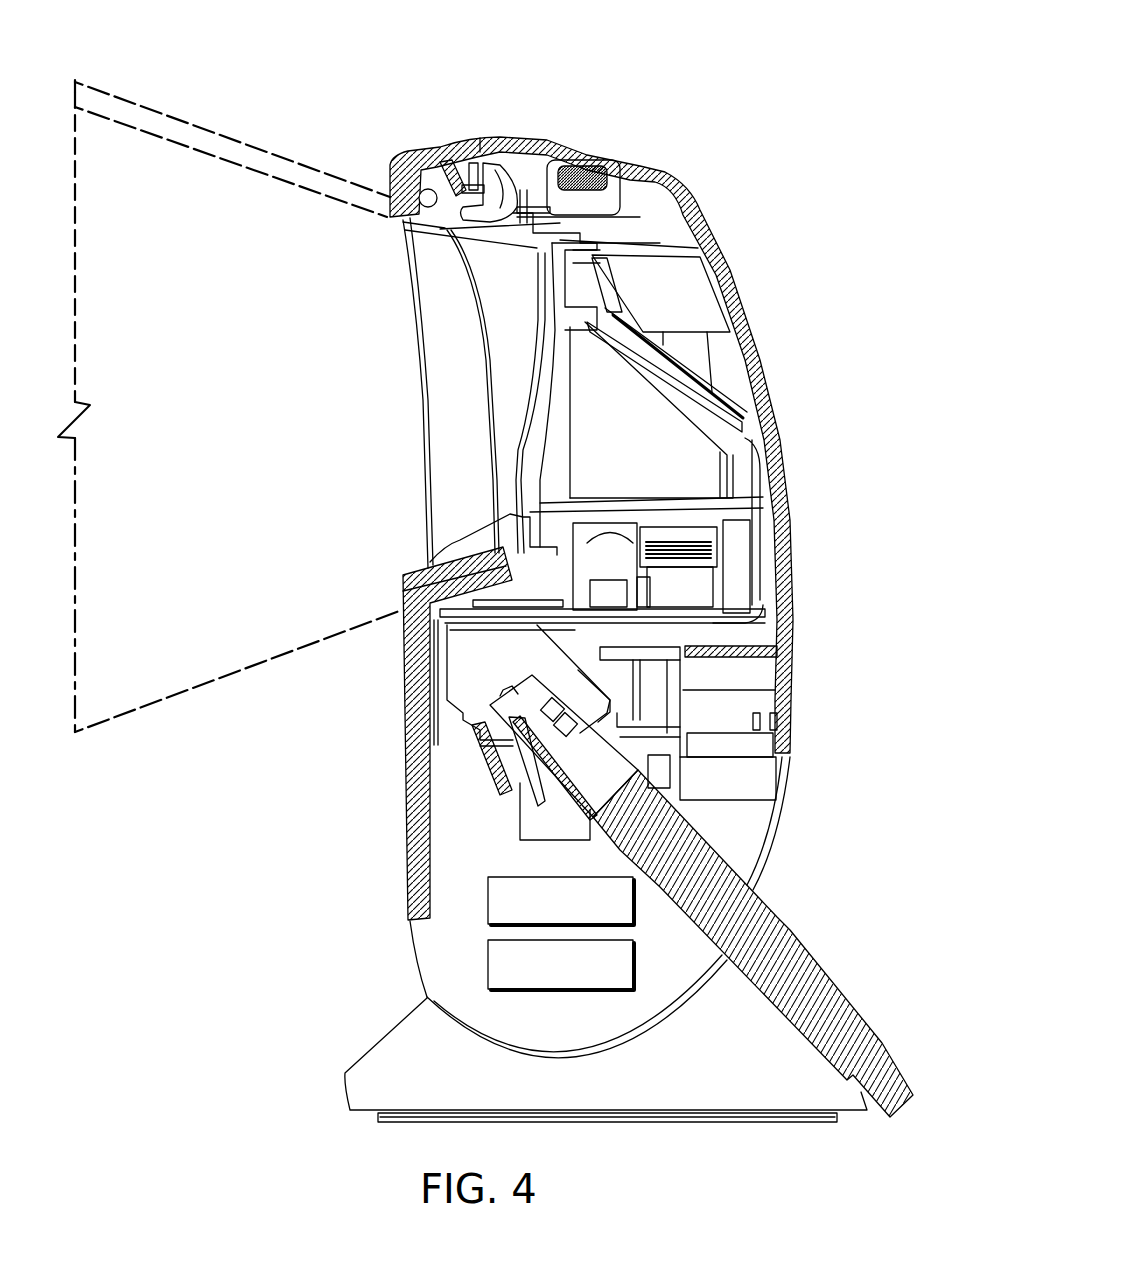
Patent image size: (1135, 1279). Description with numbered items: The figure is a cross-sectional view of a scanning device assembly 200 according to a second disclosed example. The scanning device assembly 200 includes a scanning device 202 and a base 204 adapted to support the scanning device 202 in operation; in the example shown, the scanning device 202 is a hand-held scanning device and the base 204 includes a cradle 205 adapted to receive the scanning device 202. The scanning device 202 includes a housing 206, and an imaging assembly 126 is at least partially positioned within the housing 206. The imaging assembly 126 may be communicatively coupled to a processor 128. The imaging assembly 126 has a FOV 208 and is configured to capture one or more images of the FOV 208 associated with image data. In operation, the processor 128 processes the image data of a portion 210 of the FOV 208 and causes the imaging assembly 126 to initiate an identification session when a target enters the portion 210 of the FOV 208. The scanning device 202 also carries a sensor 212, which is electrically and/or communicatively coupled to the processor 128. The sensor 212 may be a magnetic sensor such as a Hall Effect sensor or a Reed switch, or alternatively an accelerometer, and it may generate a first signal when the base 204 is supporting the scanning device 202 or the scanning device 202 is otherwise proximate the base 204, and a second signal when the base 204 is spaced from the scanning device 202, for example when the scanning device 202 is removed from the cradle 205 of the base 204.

The scanning device assembly 200 is at (734, 50).
The scanning device 202 is at (679, 186).
The base 204 is at (829, 922).
The cradle 205 is at (427, 998).
The housing 206 is at (790, 684).
The FOV 208 is at (167, 114).
The portion of the FOV 210 is at (276, 166).
The imaging assembly 126 is at (722, 386).
The processor 128 is at (488, 900).
The sensor 212 is at (488, 966).